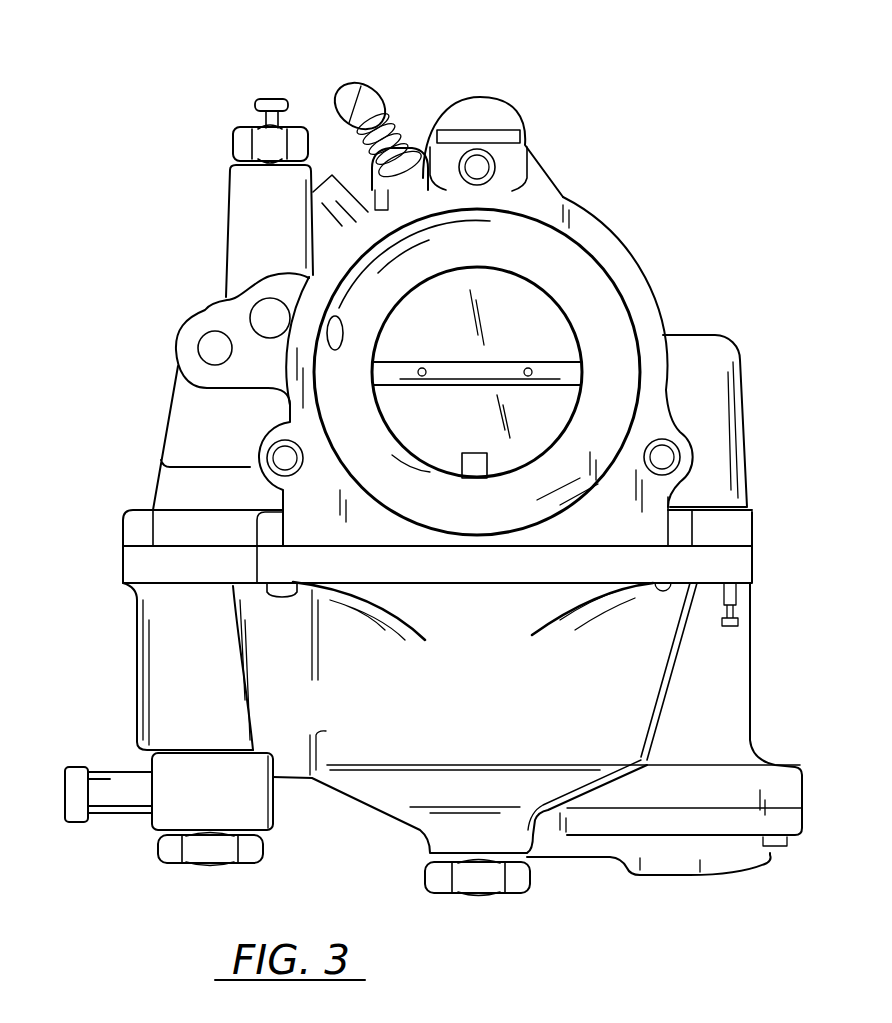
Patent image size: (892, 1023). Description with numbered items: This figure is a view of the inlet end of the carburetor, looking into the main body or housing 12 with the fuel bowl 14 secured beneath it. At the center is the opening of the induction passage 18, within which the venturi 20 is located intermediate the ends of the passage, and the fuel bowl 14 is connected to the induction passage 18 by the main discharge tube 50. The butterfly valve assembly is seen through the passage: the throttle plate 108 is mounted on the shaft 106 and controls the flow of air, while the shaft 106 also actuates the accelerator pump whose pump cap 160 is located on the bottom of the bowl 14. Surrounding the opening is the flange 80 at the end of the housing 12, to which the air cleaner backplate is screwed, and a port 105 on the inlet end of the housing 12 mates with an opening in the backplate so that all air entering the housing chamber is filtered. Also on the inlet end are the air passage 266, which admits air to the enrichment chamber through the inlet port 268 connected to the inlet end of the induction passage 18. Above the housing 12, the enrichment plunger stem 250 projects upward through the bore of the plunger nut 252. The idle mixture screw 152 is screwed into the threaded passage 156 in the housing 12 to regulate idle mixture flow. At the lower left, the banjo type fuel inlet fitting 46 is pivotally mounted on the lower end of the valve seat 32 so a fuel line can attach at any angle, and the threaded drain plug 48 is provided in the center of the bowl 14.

The main body or housing 12 is at (658, 312).
The fuel bowl 14 is at (125, 655).
The induction passage 18 is at (530, 523).
The venturi 20 is at (398, 442).
The valve seat 32 is at (170, 855).
The banjo type fuel inlet fitting 46 is at (262, 820).
The threaded drain plug 48 is at (527, 882).
The main discharge tube 50 is at (488, 460).
The flange 80 is at (562, 198).
The port 105 is at (205, 338).
The shaft 106 is at (535, 362).
The throttle plate 108 is at (480, 315).
The idle mixture screw 152 is at (342, 100).
The threaded passage 156 is at (395, 125).
The pump cap 160 is at (697, 872).
The stem 250 is at (271, 97).
The plunger nut 252 is at (237, 140).
The air passage 266 is at (257, 308).
The inlet port 268 is at (340, 332).